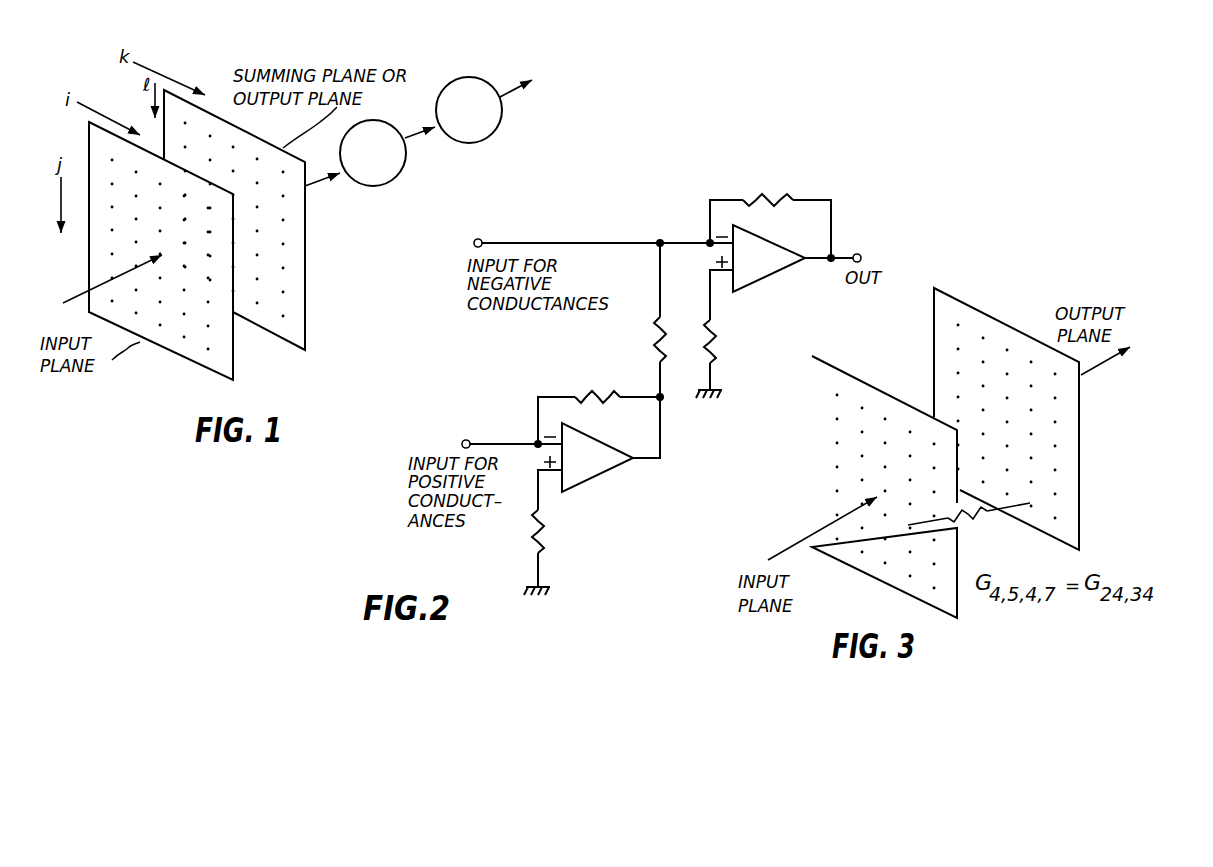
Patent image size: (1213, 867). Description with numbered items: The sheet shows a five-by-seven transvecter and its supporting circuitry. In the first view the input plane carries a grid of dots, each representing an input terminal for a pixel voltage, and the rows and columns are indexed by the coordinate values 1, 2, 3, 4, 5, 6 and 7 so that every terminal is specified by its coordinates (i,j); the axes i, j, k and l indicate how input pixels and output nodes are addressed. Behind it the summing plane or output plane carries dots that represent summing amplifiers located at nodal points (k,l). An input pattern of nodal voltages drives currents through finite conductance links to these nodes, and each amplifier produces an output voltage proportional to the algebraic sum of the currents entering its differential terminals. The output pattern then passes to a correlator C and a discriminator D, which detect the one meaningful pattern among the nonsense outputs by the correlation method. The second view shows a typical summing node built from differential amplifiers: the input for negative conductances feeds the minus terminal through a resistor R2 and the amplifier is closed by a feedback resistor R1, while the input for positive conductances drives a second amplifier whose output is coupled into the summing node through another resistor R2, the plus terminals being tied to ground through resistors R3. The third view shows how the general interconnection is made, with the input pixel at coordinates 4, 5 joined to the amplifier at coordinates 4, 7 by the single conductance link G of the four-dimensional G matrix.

In FIG. 1, the row/column coordinate index 1 is at (154, 173).
In FIG. 1, the row/column coordinate index 2 is at (152, 192).
In FIG. 1, the row/column coordinate index 3 is at (152, 210).
In FIG. 1, the coordinate index 4 is at (152, 227).
In FIG. 3, the coordinate index 4 is at (967, 390).
In FIG. 1, the coordinate index 5 is at (156, 246).
In FIG. 3, the coordinate index 5 is at (876, 511).
In FIG. 1, the row coordinate index 6 is at (152, 296).
In FIG. 1, the row coordinate index 7 is at (152, 319).
In FIG. 3, the row coordinate index 7 is at (1061, 517).
In FIG. 1, the correlator C is at (373, 153).
In FIG. 1, the discriminator D is at (469, 110).
In FIG. 2, the feedback resistor R1 is at (768, 188).
In FIG. 2, the input resistor R2 is at (620, 360).
In FIG. 2, the grounding resistor R3 is at (641, 439).